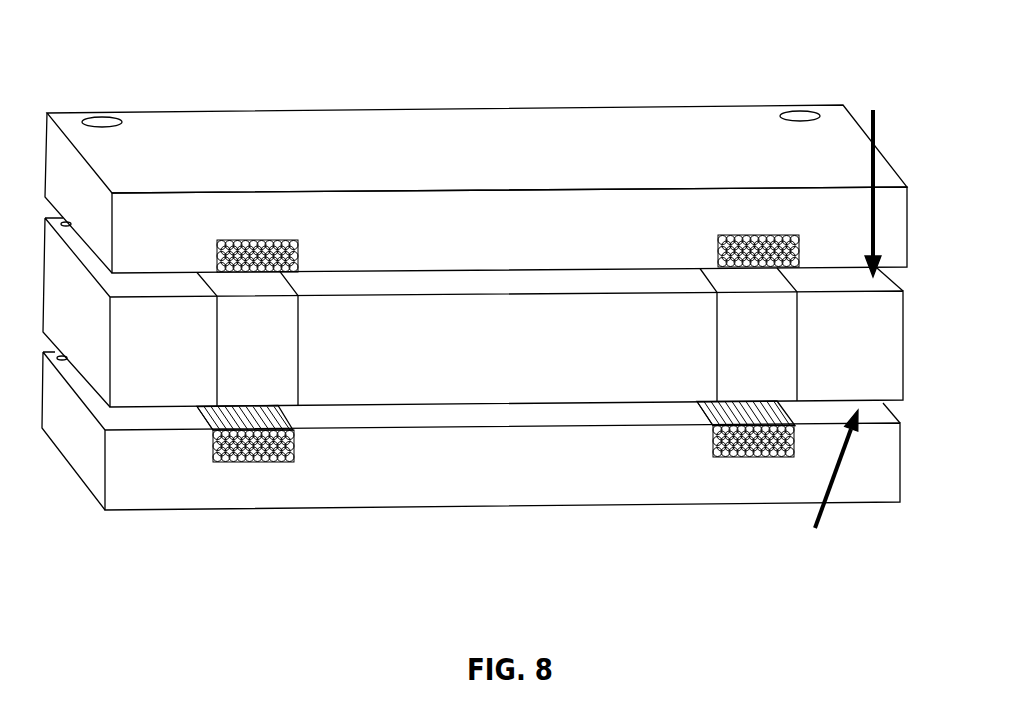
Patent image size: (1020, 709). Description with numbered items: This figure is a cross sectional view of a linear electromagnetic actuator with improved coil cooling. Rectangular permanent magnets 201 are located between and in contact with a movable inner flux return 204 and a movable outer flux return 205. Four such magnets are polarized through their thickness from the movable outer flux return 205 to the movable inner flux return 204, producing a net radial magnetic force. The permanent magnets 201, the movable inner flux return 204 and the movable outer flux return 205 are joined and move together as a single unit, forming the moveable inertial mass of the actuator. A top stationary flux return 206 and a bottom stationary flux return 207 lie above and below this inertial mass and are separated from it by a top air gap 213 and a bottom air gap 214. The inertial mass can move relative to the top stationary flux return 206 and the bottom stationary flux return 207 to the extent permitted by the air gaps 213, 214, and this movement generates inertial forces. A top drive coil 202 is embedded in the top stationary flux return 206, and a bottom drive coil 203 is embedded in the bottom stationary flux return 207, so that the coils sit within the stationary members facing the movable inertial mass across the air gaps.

The rectangular permanent magnets 201 is at (283, 377).
The top drive coil 202 is at (242, 247).
The bottom drive coil 203 is at (243, 445).
The movable inner flux return 204 is at (540, 283).
The movable outer flux return 205 is at (823, 280).
The top stationary flux return 206 is at (432, 170).
The bottom stationary flux return 207 is at (507, 457).
The top air gap 213 is at (879, 175).
The bottom air gap 214 is at (823, 491).